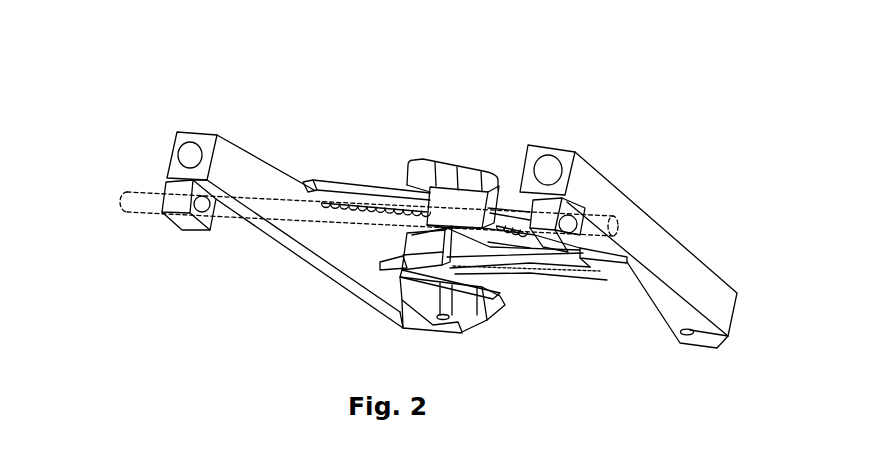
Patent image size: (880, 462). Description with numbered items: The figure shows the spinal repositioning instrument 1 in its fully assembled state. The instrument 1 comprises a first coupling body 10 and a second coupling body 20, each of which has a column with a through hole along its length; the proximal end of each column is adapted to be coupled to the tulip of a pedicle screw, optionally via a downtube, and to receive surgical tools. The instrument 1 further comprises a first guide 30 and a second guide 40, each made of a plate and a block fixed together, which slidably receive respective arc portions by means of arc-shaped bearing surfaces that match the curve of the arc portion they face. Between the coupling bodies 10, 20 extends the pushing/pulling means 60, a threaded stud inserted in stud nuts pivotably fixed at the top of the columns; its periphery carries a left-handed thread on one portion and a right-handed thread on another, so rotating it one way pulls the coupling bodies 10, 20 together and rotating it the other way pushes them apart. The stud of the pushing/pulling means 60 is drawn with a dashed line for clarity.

The spinal repositioning instrument 1 is at (638, 78).
The first coupling body 10 is at (572, 135).
The second coupling body 20 is at (207, 122).
The first guide 30 is at (503, 302).
The second guide 40 is at (435, 182).
The pushing/pulling means 60 is at (128, 182).